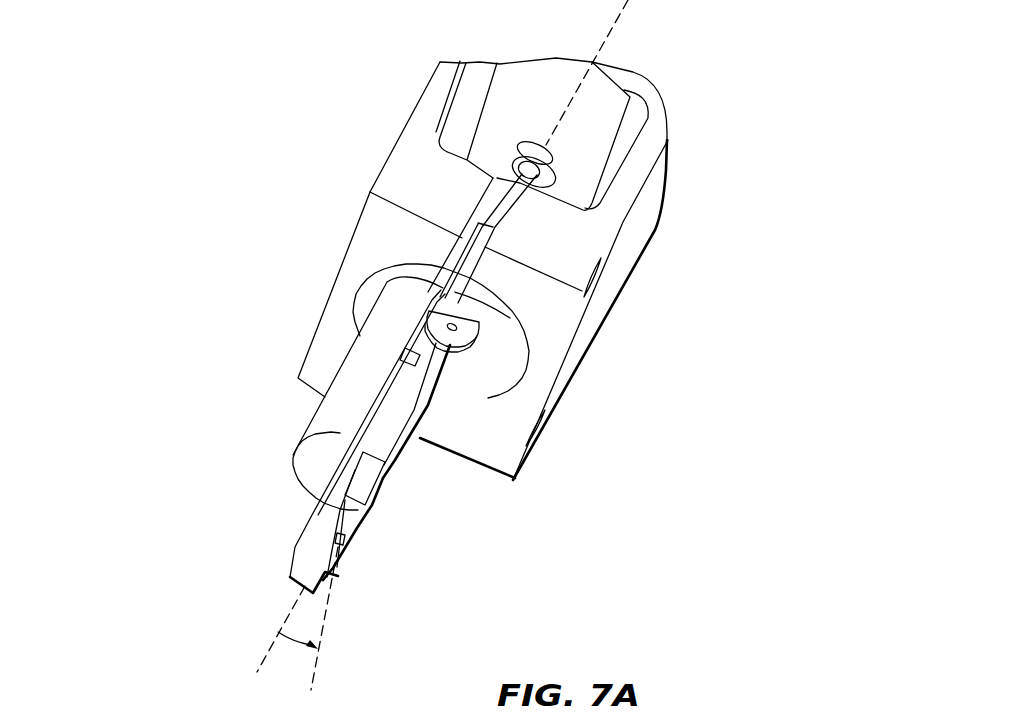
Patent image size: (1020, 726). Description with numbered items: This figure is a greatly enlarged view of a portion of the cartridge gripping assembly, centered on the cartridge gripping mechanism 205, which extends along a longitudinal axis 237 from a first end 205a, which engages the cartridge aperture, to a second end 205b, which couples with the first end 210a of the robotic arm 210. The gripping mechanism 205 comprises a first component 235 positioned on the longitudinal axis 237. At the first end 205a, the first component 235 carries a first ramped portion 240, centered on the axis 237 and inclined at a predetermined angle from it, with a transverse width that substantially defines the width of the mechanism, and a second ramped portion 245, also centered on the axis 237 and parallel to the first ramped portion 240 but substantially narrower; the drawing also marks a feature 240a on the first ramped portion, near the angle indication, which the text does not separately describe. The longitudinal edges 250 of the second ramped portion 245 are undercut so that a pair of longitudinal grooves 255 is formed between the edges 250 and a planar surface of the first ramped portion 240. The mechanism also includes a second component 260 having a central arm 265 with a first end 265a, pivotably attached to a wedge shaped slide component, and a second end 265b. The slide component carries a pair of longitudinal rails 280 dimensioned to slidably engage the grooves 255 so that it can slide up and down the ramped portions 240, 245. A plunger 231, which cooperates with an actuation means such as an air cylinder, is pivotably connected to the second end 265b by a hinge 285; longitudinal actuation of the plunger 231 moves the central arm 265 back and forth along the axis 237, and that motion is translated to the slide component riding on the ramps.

The cartridge gripping mechanism 205 is at (195, 333).
The first end of gripping mechanism 205a is at (247, 507).
The second end of gripping mechanism 205b is at (330, 218).
The robotic arm 210 is at (703, 363).
The first end of robotic arm 210a is at (547, 417).
The plunger 231 is at (527, 145).
The first component 235 is at (345, 418).
The longitudinal axis 237 is at (612, 23).
The first ramped portion 240 is at (347, 480).
The tip axis 240a is at (324, 619).
The second ramped portion 245 is at (335, 548).
The longitudinal edges 250 is at (335, 538).
The longitudinal grooves 255 is at (335, 531).
The second component 260 is at (417, 457).
The central arm 265 is at (410, 420).
The first end of central arm 265a is at (407, 418).
The second end of central arm 265b is at (518, 468).
The longitudinal rails 280 is at (350, 503).
The hinge 285 is at (517, 333).